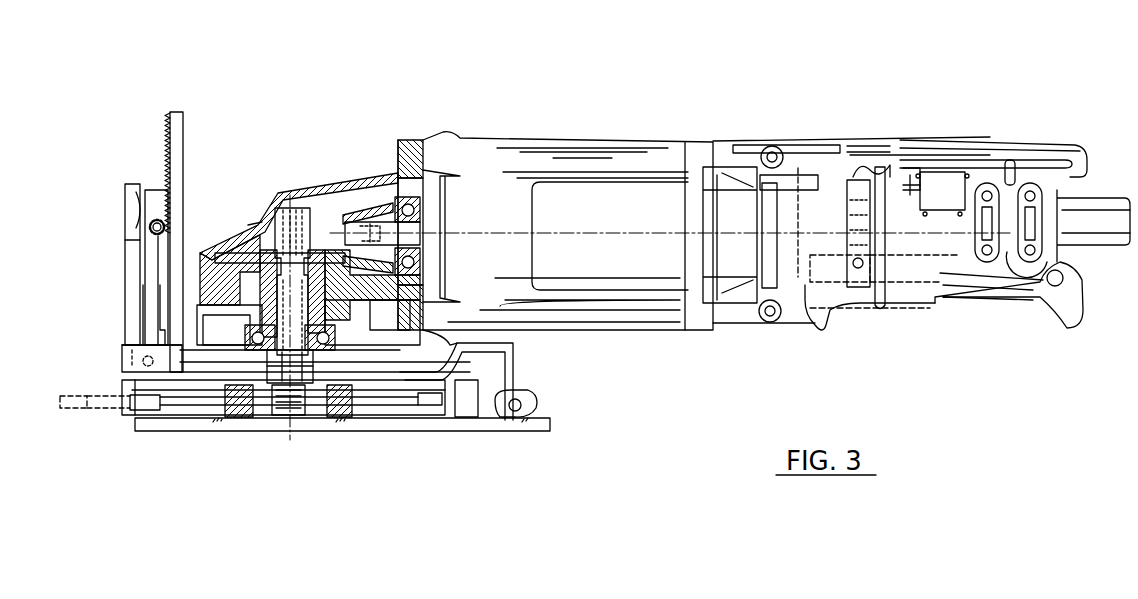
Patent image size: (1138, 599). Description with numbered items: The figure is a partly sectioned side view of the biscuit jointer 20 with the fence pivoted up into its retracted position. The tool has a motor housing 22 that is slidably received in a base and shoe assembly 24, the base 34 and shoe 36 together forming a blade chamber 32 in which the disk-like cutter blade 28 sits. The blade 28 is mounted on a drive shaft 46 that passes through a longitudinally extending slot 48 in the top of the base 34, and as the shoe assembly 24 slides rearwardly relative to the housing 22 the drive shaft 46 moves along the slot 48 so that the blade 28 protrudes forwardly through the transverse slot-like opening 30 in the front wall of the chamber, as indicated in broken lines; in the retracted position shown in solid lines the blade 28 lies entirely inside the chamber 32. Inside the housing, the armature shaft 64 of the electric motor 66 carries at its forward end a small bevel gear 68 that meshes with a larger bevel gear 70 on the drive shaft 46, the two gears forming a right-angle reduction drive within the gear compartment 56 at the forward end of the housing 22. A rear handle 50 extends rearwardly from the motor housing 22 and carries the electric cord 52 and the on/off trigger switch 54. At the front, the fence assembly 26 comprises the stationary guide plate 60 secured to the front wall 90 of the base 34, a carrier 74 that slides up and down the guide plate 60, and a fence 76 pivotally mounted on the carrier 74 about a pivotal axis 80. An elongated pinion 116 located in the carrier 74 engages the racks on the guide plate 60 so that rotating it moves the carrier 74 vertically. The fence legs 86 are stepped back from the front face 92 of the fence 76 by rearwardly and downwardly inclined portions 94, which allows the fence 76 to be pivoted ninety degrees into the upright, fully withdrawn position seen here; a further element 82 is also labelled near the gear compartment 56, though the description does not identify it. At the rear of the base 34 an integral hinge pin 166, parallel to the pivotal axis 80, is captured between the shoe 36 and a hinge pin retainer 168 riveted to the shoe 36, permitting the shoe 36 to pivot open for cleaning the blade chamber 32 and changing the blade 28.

The biscuit jointer 20 is at (447, 103).
The motor housing 22 is at (543, 137).
The base and shoe assembly 24 is at (527, 437).
The fence assembly 26 is at (101, 181).
The cutter blade 28 is at (188, 403).
The transverse slot-like opening 30 is at (120, 408).
The blade chamber 32 is at (387, 410).
The base 34 is at (480, 373).
The shoe 36 is at (273, 425).
The drive shaft 46 is at (302, 366).
The longitudinally extending slot 48 is at (363, 375).
The rear handle 50 is at (980, 140).
The electric cord 52 is at (1108, 223).
The on/off trigger switch 54 is at (898, 317).
The gear compartment 56 is at (332, 182).
The guide plate 60 is at (181, 140).
The armature shaft 64 is at (385, 236).
The electric motor 66 is at (770, 233).
The small bevel gear 68 is at (368, 210).
The larger bevel gear 70 is at (231, 263).
The carrier 74 is at (155, 195).
The fence 76 is at (131, 251).
The pivotal axis 80 is at (127, 365).
The spindle collar 82 is at (252, 222).
The fence legs 86 is at (153, 331).
The front wall 90 is at (123, 427).
The front face 92 is at (126, 198).
The inclined portions 94 is at (150, 328).
The pinion 116 is at (165, 226).
The hinge pin 166 is at (515, 418).
The hinge pin retainer 168 is at (530, 396).